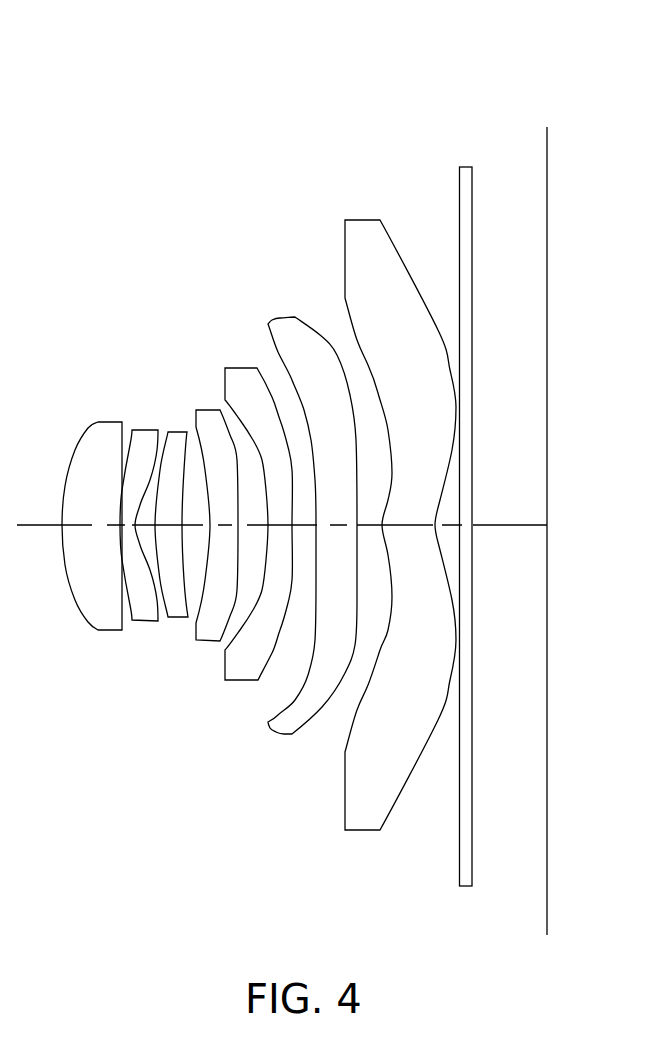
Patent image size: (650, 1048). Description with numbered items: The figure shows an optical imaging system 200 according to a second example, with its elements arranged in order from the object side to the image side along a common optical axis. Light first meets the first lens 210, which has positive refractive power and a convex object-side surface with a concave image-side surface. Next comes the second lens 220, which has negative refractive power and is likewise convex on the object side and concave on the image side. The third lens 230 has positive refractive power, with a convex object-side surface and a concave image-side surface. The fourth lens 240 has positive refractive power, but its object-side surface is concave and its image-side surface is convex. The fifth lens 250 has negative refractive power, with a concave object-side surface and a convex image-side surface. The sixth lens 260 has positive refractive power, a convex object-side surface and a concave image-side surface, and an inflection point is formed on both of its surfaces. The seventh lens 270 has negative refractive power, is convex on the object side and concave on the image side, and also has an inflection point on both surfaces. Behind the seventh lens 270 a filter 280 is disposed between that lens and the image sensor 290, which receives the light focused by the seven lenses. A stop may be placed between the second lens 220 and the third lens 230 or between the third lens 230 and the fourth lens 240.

The optical imaging system 200 is at (186, 174).
The first lens 210 is at (93, 618).
The second lens 220 is at (138, 618).
The third lens 230 is at (178, 612).
The fourth lens 240 is at (212, 641).
The fifth lens 250 is at (233, 367).
The sixth lens 260 is at (275, 320).
The seventh lens 270 is at (353, 222).
The filter 280 is at (463, 167).
The image sensor 290 is at (547, 127).